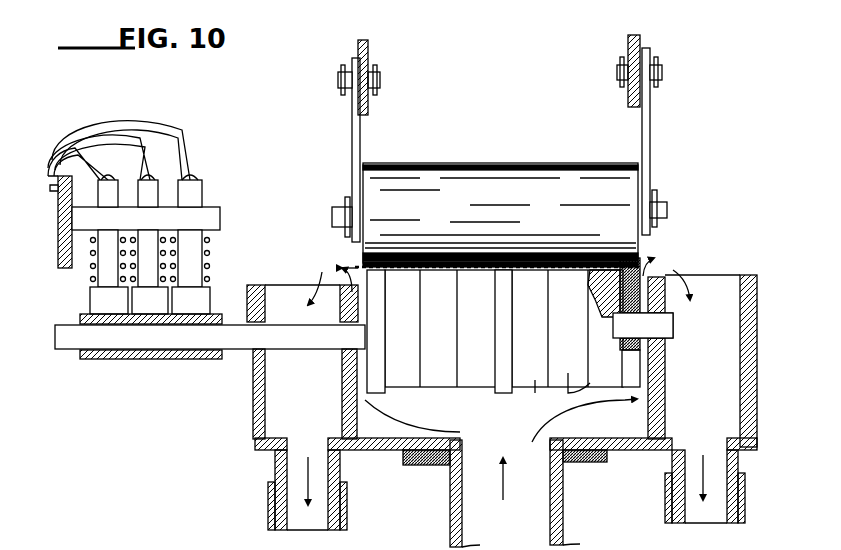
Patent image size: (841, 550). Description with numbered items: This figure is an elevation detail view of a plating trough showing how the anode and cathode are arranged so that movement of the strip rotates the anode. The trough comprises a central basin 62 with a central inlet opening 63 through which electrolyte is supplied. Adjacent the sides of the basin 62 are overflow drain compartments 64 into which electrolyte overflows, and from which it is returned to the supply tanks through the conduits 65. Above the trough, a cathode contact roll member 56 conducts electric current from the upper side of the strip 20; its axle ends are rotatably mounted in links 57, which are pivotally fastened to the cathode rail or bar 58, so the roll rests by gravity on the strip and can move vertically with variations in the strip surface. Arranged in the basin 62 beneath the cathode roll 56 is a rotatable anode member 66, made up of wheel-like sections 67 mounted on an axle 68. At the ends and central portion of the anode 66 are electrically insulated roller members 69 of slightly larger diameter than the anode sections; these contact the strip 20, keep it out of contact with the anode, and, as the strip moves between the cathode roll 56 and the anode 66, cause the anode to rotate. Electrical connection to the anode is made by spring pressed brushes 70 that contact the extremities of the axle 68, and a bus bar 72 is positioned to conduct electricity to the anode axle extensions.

The strip 20 is at (642, 262).
The cathode contact roll member 56 is at (503, 165).
The link 57 is at (362, 150).
The cathode rail or bar 58 is at (368, 50).
The basin 62 is at (400, 444).
The central inlet opening 63 is at (452, 472).
The overflow drain compartment 64 is at (274, 290).
The conduit 65 is at (292, 530).
The rotatable anode member 66 is at (483, 388).
The wheel-like section 67 is at (562, 390).
The axle 68 is at (232, 352).
The electrically insulated roller member 69 is at (378, 362).
The spring pressed brush 70 is at (95, 300).
The bus bar 72 is at (58, 238).